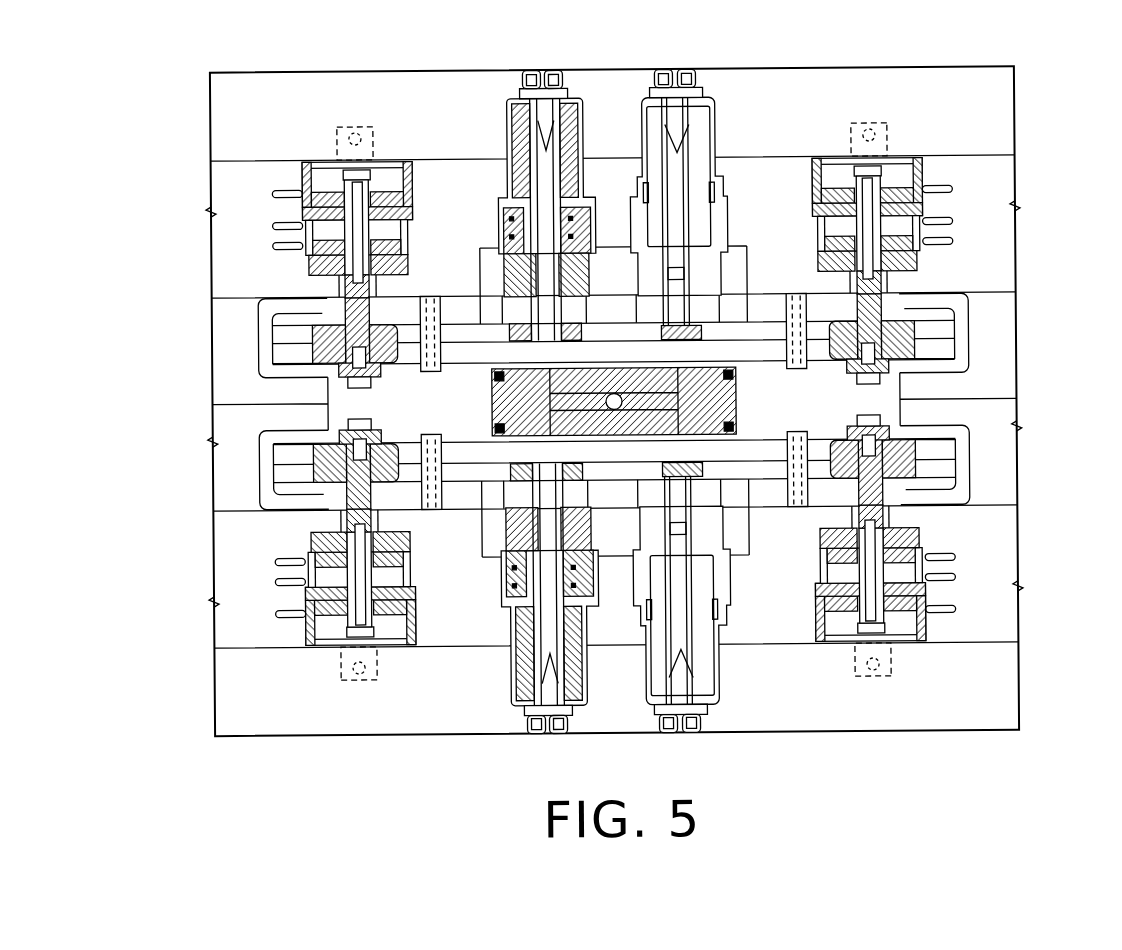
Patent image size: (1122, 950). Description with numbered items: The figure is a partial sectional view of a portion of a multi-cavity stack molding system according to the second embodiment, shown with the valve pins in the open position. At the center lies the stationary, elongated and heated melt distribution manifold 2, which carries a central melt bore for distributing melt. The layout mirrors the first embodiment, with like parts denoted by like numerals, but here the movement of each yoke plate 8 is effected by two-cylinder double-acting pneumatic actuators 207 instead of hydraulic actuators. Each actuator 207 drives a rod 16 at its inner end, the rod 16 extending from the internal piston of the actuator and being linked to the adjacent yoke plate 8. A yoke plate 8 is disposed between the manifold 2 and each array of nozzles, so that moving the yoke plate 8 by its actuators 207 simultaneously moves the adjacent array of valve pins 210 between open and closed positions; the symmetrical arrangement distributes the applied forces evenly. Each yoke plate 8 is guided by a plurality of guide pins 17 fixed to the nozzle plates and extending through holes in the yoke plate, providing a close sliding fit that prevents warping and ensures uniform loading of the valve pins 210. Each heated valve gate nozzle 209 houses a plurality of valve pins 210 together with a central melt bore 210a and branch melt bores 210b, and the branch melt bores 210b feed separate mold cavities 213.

The melt distribution manifold 2 is at (730, 401).
The yoke plate 8 is at (259, 337).
The rod 16 is at (346, 296).
The guide pin 17 is at (431, 296).
The two-cylinder double-acting pneumatic actuator 207 is at (304, 178).
The heated valve gate nozzle 209 is at (715, 100).
The valve pin 210 is at (509, 150).
The central melt bore 210a is at (580, 688).
The branch melt bore 210b is at (532, 495).
The mold cavity 213 is at (530, 71).